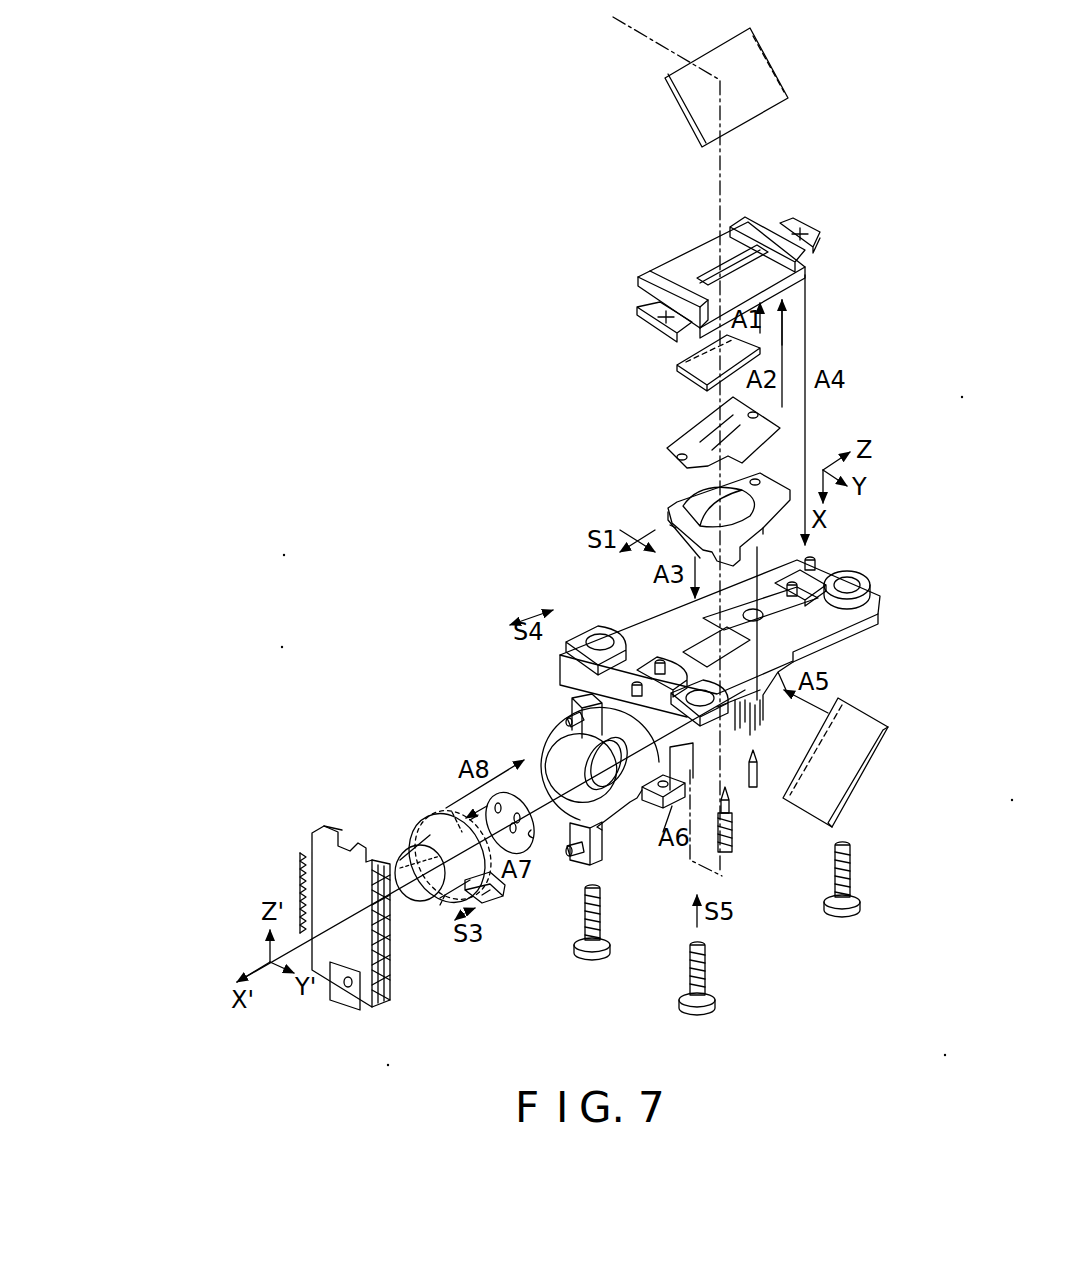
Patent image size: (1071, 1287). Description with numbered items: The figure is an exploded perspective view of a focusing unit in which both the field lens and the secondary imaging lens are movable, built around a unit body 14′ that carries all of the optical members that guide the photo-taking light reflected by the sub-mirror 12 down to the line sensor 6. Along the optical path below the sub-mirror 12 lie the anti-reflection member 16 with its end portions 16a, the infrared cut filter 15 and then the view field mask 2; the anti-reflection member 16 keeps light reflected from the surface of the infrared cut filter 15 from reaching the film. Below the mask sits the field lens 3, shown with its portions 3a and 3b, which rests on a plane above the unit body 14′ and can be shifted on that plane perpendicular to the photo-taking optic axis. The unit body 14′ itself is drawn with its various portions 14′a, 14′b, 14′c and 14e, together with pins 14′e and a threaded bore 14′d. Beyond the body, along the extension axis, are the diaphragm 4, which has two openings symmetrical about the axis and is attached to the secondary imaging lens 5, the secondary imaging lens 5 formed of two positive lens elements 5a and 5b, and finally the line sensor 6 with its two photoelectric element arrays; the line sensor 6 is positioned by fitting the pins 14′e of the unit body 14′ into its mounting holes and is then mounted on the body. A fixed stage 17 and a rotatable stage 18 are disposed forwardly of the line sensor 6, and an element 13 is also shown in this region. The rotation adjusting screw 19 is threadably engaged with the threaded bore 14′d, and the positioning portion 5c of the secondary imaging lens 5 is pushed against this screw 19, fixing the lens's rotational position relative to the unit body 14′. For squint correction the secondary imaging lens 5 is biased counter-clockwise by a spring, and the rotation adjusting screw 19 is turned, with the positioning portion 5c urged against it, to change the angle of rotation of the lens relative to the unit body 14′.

The sub-mirror 12 is at (690, 96).
The anti-reflection member 16 is at (703, 257).
The tab of slider frame 16a is at (803, 224).
The infrared cut filter 15 is at (680, 373).
The view field mask 2 is at (678, 445).
The field lens 3 is at (702, 515).
The hole of lens holder 3a is at (750, 482).
The edge of lens holder 3b is at (680, 505).
The unit body 14′ is at (686, 720).
The pin of base member 14′a is at (800, 590).
The boss of base member 14′c is at (598, 634).
The bore of base member 14′b is at (560, 748).
The pins 14′e is at (572, 718).
The threaded bore 14′d is at (650, 825).
The pin of base member 14e is at (570, 856).
The diaphragm 4 is at (508, 805).
The secondary imaging lens 5 is at (457, 860).
The positive lens element 5a is at (446, 810).
The positive lens element 5b is at (440, 905).
The positioning portion 5c is at (505, 892).
The line sensor 6 is at (318, 840).
The plate 13 is at (815, 815).
The fixed stage 17 is at (592, 955).
The rotatable stage 18 is at (757, 782).
The rotation adjusting screw 19 is at (730, 852).